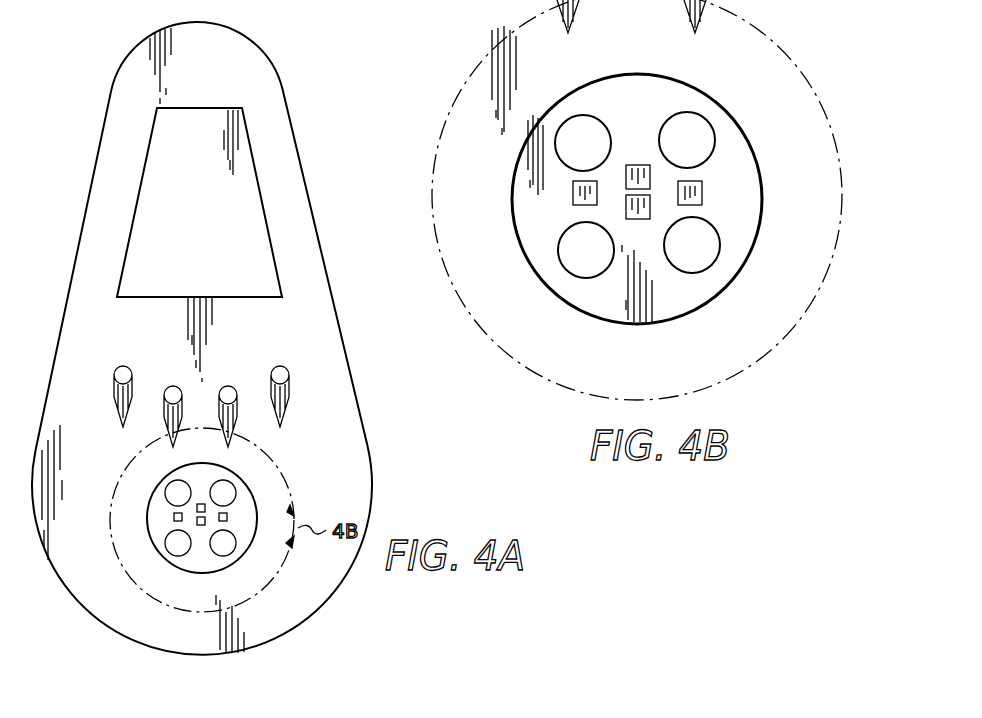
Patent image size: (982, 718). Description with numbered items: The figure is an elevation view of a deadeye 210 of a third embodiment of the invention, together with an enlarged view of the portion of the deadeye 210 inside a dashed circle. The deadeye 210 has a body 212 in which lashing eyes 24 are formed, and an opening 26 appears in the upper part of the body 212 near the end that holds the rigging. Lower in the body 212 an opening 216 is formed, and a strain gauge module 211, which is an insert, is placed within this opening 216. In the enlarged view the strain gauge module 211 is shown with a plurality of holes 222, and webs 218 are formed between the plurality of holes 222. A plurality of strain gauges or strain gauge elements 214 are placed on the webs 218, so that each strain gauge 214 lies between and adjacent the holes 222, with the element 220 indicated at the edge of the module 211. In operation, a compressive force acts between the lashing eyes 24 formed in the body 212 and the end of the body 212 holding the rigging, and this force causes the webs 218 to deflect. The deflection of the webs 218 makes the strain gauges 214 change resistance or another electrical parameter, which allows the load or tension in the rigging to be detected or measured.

In FIG. 4A, the deadeye 210 is at (340, 224).
In FIG. 4A, the body 212 is at (112, 160).
In FIG. 4A, the opening 26 is at (230, 185).
In FIG. 4A, the lashing eyes 24 is at (122, 374).
In FIG. 4B, the lashing eyes 24 is at (631, 16).
In FIG. 4A, the strain gauge module 211 is at (258, 490).
In FIG. 4B, the strain gauge module 211 is at (745, 125).
In FIG. 4A, the holes 222 is at (200, 518).
In FIG. 4B, the holes 222 is at (588, 132).
In FIG. 4A, the strain gauges 214 is at (200, 514).
In FIG. 4B, the strain gauges 214 is at (640, 165).
In FIG. 4B, the opening 216 is at (737, 272).
In FIG. 4B, the webs 218 is at (627, 255).
In FIG. 4B, the ring 220 is at (536, 248).